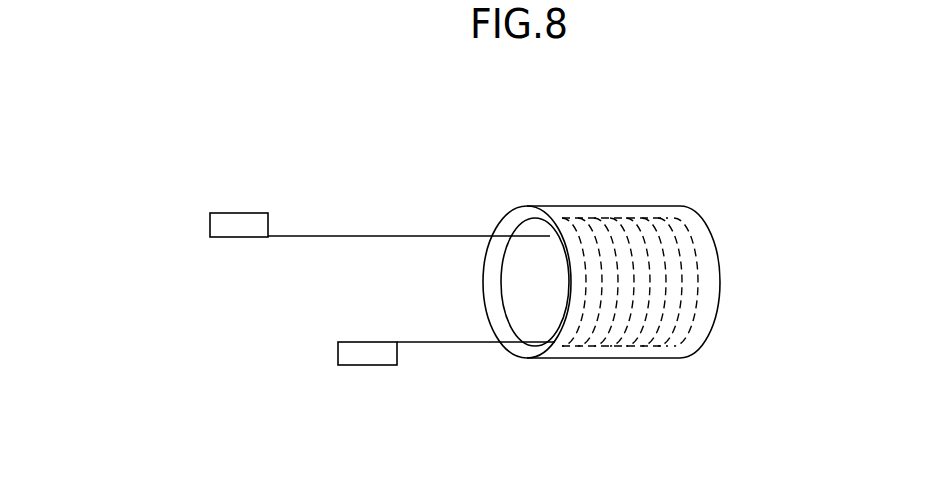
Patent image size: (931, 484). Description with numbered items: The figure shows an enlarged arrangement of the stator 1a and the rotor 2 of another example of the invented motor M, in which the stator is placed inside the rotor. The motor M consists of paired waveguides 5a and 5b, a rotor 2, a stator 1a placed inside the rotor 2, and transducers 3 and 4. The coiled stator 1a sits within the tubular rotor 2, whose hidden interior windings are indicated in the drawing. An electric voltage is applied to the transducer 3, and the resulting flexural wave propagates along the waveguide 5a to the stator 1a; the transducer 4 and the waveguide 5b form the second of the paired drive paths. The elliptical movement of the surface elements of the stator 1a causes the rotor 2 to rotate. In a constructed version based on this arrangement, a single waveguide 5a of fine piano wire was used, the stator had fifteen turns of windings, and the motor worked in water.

The motor M is at (667, 180).
The rotor 2 is at (723, 243).
The stator 1a is at (640, 346).
The transducer 3 is at (252, 213).
The transducer 4 is at (373, 342).
The waveguide 5a is at (409, 232).
The waveguide 5b is at (437, 337).